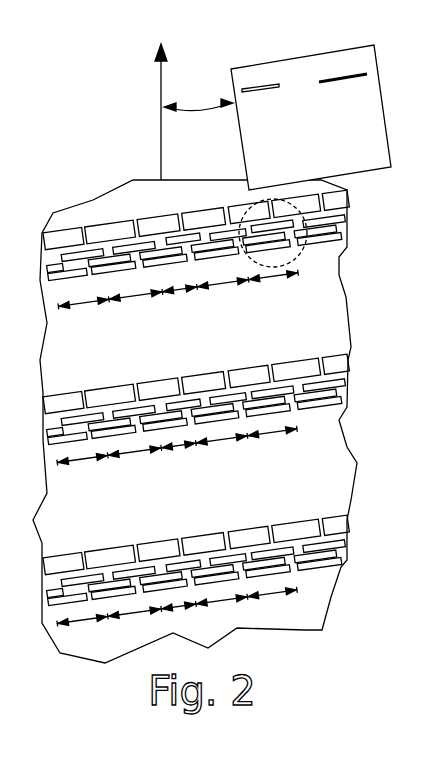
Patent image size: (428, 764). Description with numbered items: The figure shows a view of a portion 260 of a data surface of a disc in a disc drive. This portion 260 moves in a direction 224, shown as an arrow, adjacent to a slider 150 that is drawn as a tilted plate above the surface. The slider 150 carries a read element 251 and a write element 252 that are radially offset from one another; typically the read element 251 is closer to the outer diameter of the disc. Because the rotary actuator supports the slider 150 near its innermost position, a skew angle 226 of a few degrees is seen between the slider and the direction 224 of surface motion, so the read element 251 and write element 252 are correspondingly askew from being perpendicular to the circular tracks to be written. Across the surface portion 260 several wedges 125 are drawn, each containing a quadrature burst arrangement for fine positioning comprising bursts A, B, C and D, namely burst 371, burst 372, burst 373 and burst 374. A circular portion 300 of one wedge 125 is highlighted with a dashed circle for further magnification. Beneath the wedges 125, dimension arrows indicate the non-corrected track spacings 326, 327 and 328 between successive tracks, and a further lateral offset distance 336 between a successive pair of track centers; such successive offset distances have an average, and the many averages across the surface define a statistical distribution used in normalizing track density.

The wedge 125 is at (349, 190).
The slider 150 is at (298, 153).
The direction 224 is at (146, 105).
The skew angle 226 is at (198, 115).
The read element 251 is at (251, 88).
The write element 252 is at (324, 78).
The portion of a data surface 260 is at (93, 200).
The circular portion 300 is at (303, 258).
The track spacing 326 is at (272, 284).
The track spacing 327 is at (220, 291).
The segment width 328 is at (180, 296).
The lateral offset distance 336 is at (276, 436).
The burst A 371 is at (257, 226).
The burst B 372 is at (210, 243).
The burst C 373 is at (245, 241).
The burst D 374 is at (318, 243).